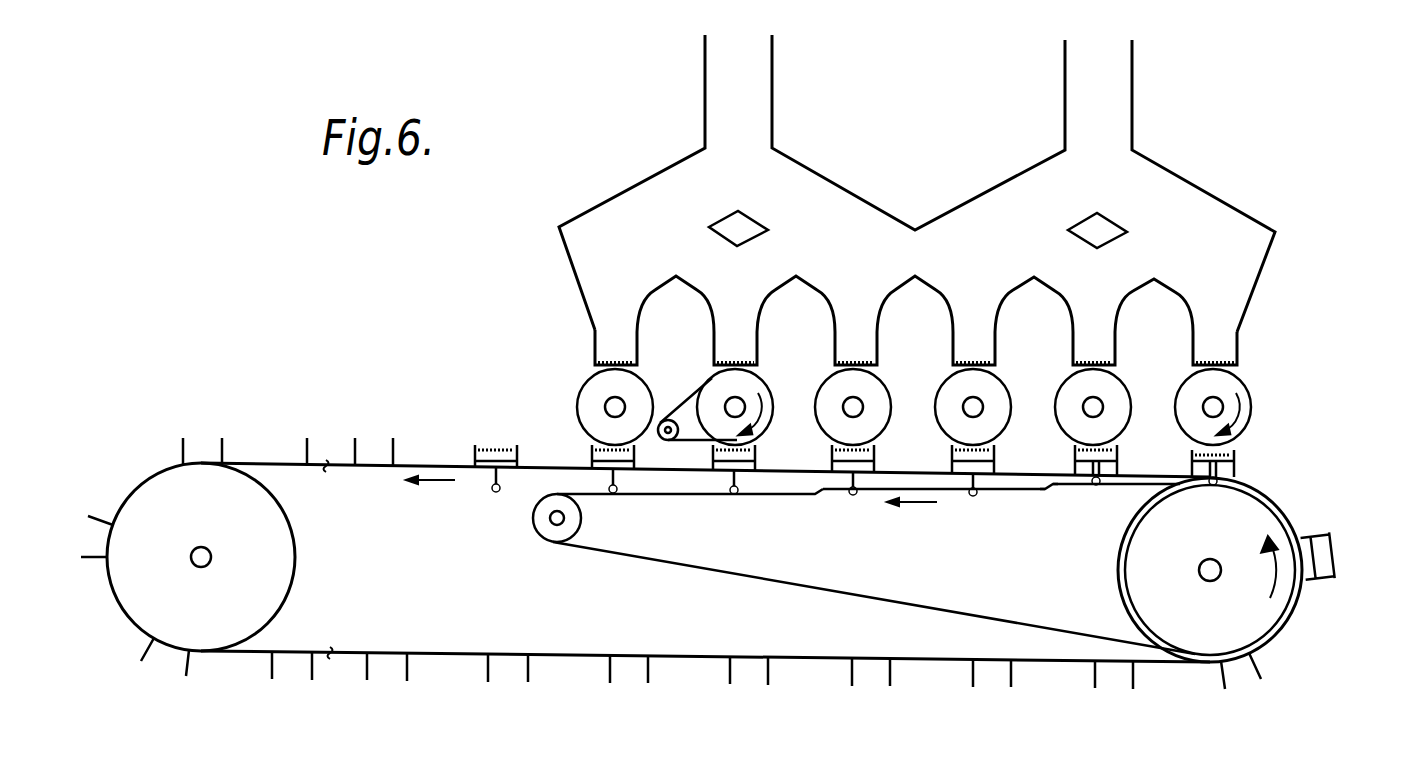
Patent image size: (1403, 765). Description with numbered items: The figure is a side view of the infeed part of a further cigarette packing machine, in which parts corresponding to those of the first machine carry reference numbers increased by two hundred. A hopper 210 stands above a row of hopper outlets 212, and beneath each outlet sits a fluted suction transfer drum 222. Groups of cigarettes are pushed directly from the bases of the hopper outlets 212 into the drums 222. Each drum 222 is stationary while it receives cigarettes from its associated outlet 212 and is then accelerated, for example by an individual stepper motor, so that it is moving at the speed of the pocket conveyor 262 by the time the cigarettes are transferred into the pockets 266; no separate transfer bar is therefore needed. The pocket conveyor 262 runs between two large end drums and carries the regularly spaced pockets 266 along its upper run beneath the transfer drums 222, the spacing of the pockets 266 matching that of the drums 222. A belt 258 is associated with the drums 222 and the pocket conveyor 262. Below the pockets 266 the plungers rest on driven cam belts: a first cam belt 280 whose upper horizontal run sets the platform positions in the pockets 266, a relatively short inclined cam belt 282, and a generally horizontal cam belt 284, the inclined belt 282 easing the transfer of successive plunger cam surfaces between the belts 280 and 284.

The hopper 210 is at (1202, 188).
The hopper outlet 212 is at (1192, 337).
The fluted suction transfer drum 222 is at (757, 377).
The cam belt 258 is at (683, 442).
The pocket conveyor 262 is at (1297, 630).
The pocket 266 is at (1312, 538).
The driven cam belt 280 is at (1133, 488).
The inclined cam belt 282 is at (1051, 490).
The horizontal cam belt 284 is at (958, 491).